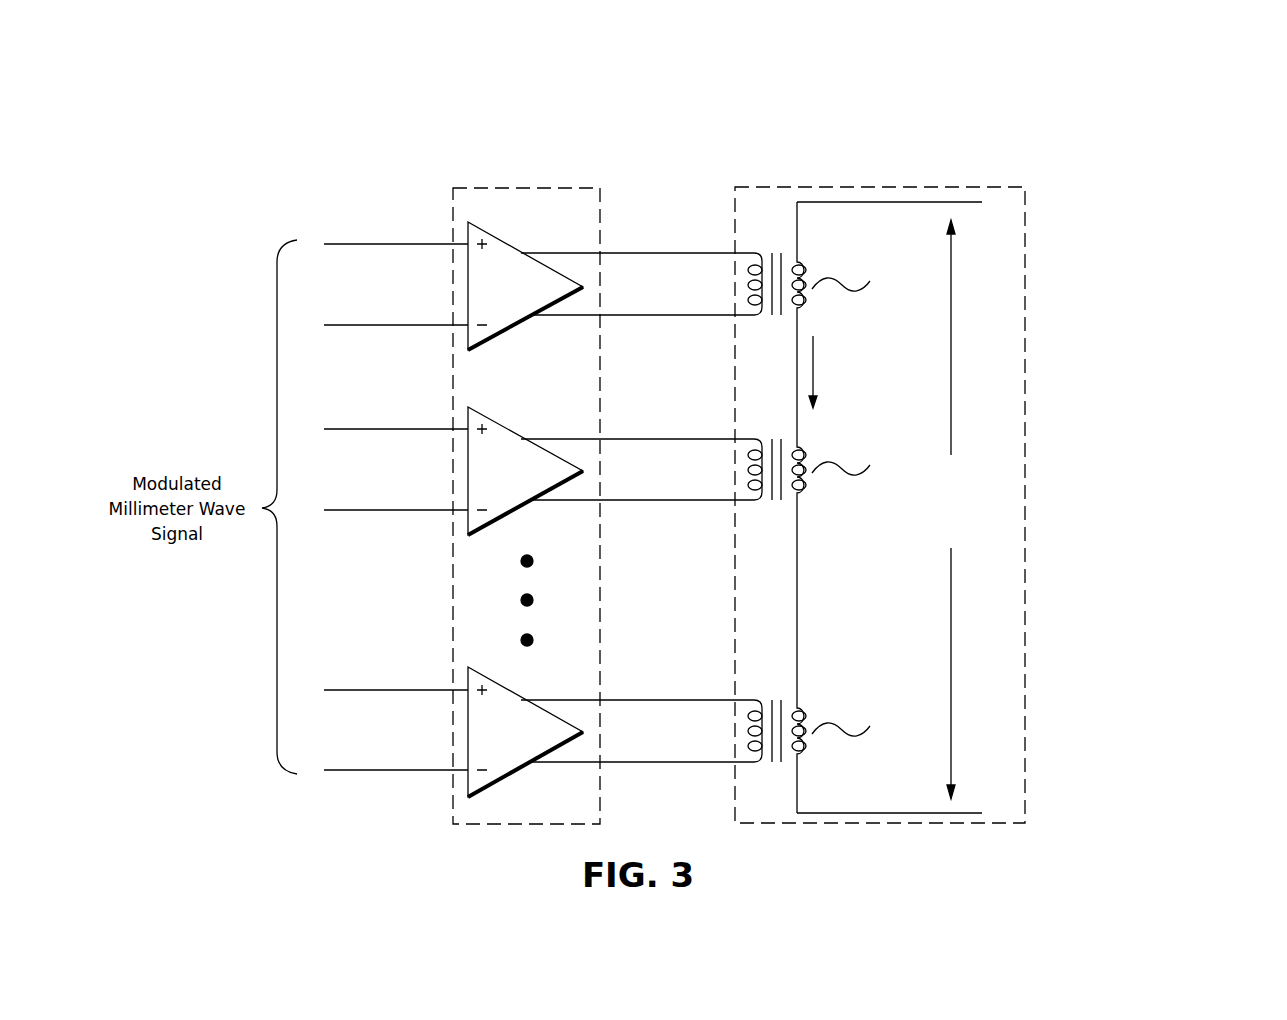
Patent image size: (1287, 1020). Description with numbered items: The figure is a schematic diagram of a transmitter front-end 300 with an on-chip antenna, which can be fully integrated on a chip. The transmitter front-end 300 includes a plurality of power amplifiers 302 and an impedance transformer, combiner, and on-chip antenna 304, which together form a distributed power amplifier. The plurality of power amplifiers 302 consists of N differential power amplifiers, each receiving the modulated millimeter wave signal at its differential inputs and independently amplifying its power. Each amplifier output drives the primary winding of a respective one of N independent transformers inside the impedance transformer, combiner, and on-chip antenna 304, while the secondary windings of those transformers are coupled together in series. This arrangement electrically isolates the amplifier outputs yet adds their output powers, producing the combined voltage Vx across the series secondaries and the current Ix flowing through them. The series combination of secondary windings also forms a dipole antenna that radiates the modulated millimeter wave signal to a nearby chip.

The transmitter front-end 300 is at (1035, 764).
The plurality of power amplifiers 302 is at (522, 188).
The impedance transformer, combiner, and on-chip antenna 304 is at (776, 188).